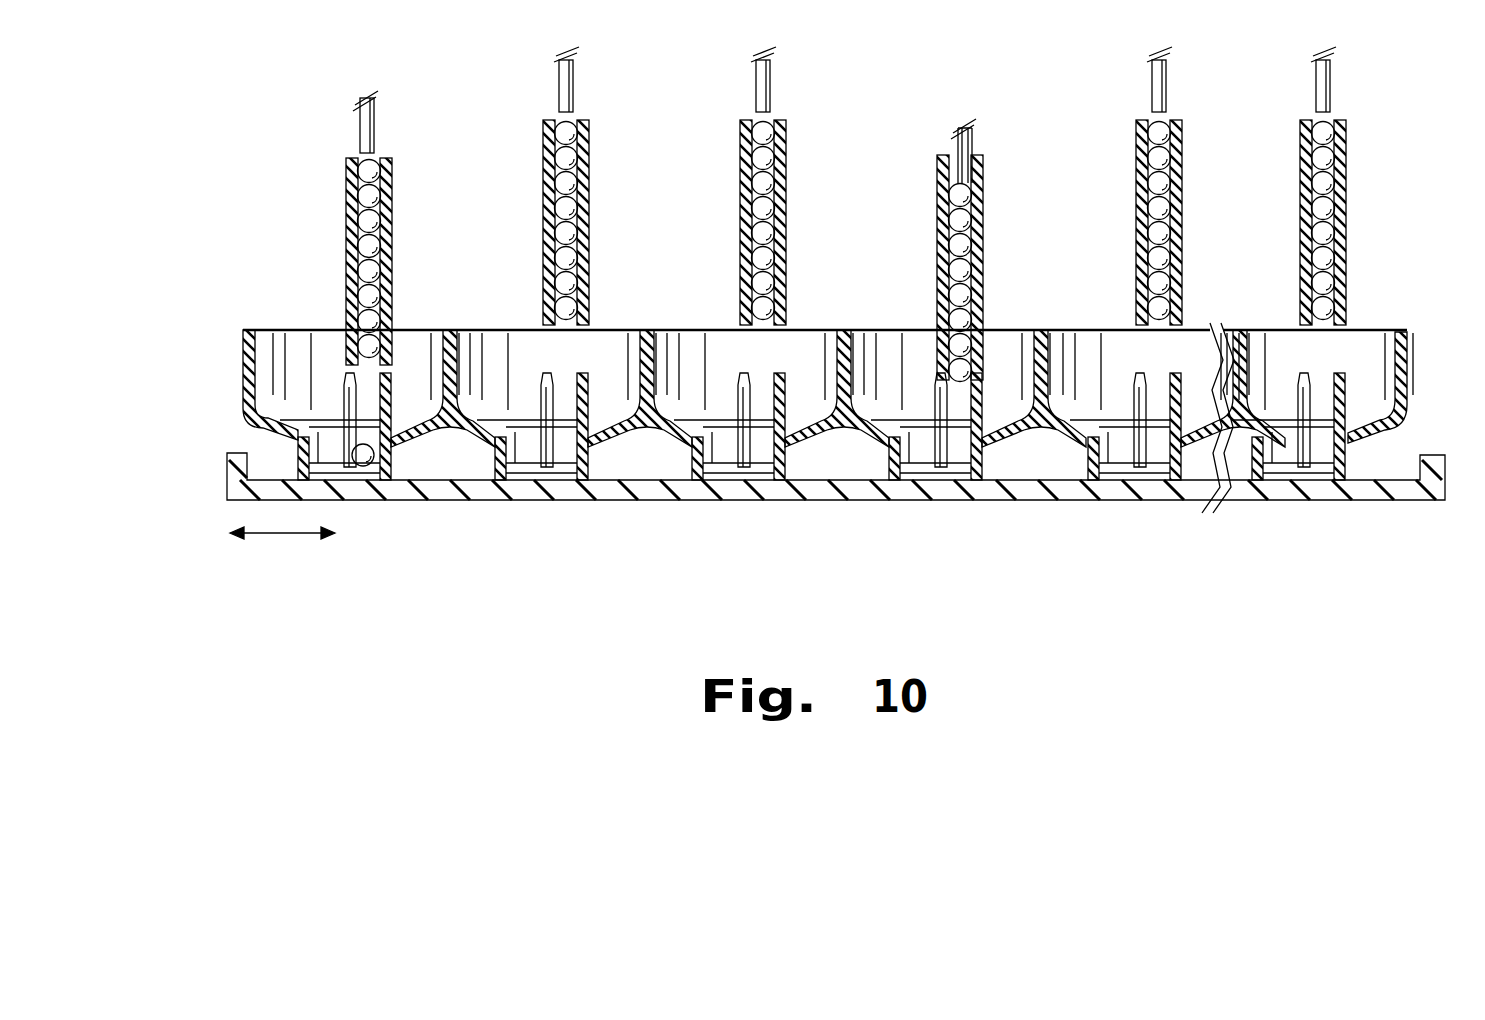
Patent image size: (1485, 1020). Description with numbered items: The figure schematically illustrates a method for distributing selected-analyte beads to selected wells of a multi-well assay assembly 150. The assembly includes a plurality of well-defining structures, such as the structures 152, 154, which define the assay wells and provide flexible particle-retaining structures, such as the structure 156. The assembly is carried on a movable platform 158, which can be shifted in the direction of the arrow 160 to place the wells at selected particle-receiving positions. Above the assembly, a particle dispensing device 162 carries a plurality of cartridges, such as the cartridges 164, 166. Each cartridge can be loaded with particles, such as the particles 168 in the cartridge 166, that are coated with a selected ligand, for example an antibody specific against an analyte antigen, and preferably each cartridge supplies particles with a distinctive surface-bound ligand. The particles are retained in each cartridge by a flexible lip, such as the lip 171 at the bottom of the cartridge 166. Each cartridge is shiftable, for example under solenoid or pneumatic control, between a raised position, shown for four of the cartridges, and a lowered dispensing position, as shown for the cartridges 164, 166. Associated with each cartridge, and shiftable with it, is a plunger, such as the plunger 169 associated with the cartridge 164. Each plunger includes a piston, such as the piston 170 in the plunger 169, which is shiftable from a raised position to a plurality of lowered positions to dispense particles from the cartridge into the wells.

The multi-well assay assembly 150 is at (1405, 351).
The well-defining structure 152 is at (243, 353).
The well-defining structure 154 is at (860, 338).
The flexible particle-retaining structure 156 is at (338, 378).
The movable platform 158 is at (1313, 500).
The arrow 160 is at (287, 533).
The particle dispensing device 162 is at (1413, 160).
The cartridge 164 is at (987, 187).
The cartridge 166 is at (397, 173).
The particles 168 is at (389, 282).
The plunger 169 is at (963, 122).
The piston 170 is at (957, 147).
The flexible lip 171 is at (390, 368).